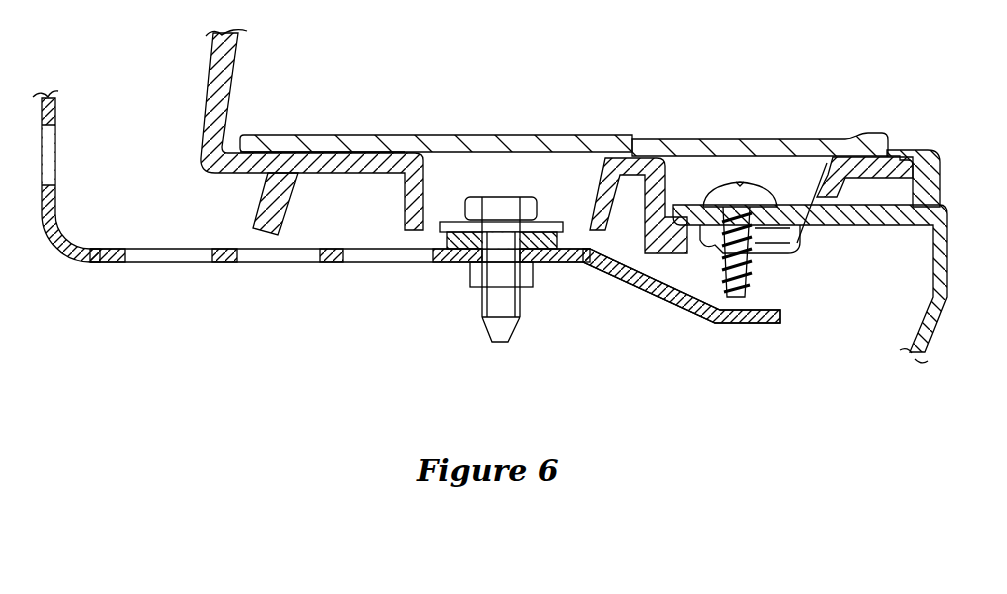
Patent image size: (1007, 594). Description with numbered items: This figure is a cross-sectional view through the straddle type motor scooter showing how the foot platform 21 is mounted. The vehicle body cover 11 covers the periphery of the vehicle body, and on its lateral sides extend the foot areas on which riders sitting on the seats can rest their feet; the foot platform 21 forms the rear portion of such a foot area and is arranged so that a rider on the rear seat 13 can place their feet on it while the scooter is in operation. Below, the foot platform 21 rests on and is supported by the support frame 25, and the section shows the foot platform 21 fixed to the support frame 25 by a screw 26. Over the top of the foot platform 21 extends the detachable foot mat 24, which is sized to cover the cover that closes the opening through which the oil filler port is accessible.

The vehicle body cover 11 is at (220, 52).
The rear seat 13 is at (393, 147).
The foot platform 21 is at (347, 147).
The detachable foot mat 24 is at (575, 148).
The support frame 25 is at (110, 262).
The screw 26 is at (500, 203).